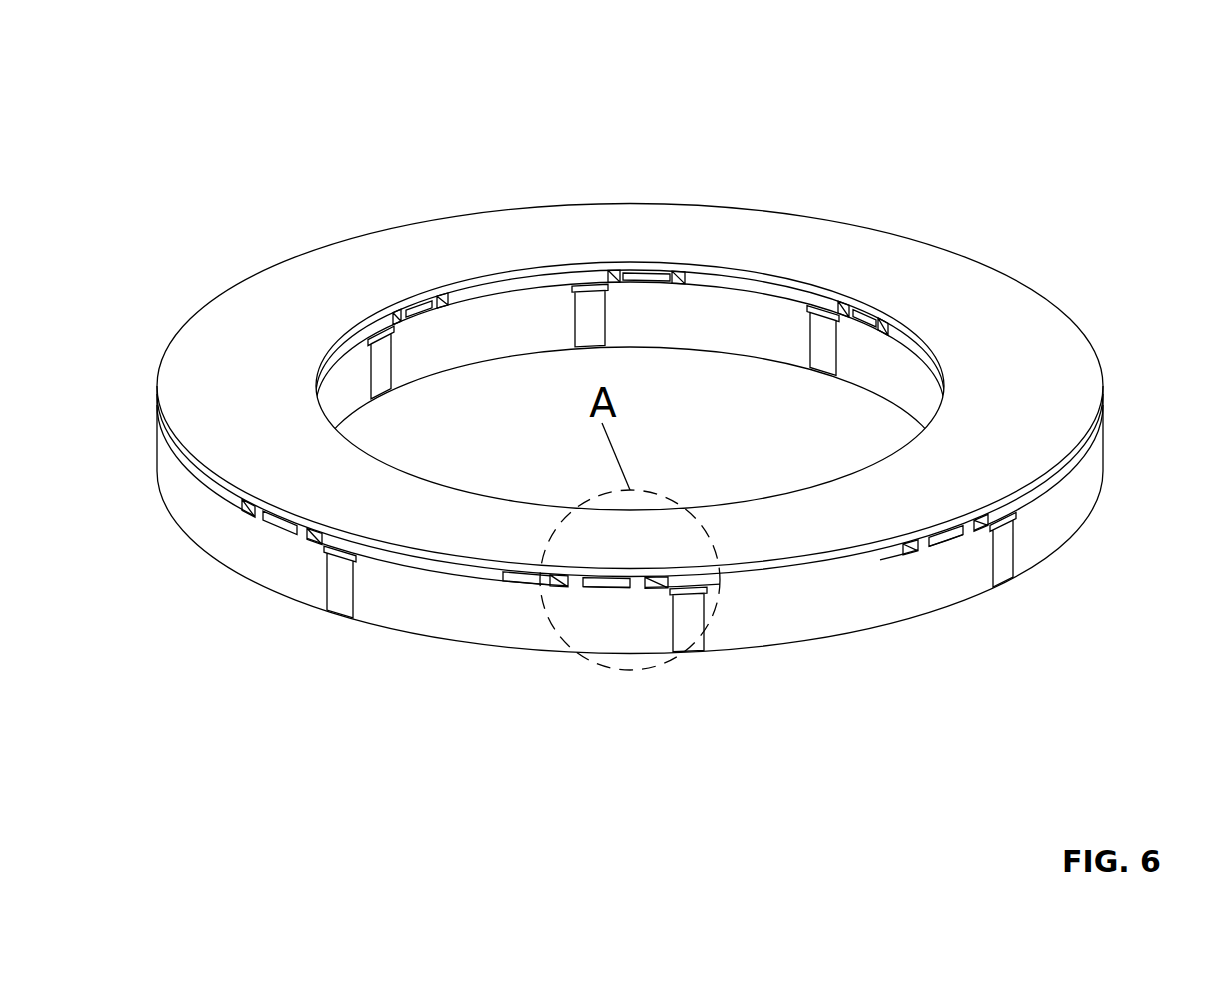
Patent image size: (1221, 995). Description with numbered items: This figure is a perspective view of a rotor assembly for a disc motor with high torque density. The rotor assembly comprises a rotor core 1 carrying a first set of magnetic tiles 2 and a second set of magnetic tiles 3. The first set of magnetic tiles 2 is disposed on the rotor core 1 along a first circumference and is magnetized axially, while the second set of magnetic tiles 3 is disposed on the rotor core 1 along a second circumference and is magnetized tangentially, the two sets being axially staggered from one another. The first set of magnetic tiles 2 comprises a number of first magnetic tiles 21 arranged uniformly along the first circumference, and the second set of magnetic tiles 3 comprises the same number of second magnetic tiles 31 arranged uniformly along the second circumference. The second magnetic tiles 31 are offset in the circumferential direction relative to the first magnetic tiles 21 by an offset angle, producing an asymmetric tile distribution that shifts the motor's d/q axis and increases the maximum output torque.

The rotor core 1 is at (257, 560).
The first set of magnetic tiles 2 is at (630, 303).
The first magnetic tiles 21 is at (1020, 492).
The second set of magnetic tiles 3 is at (670, 569).
The second magnetic tiles 31 is at (1005, 552).